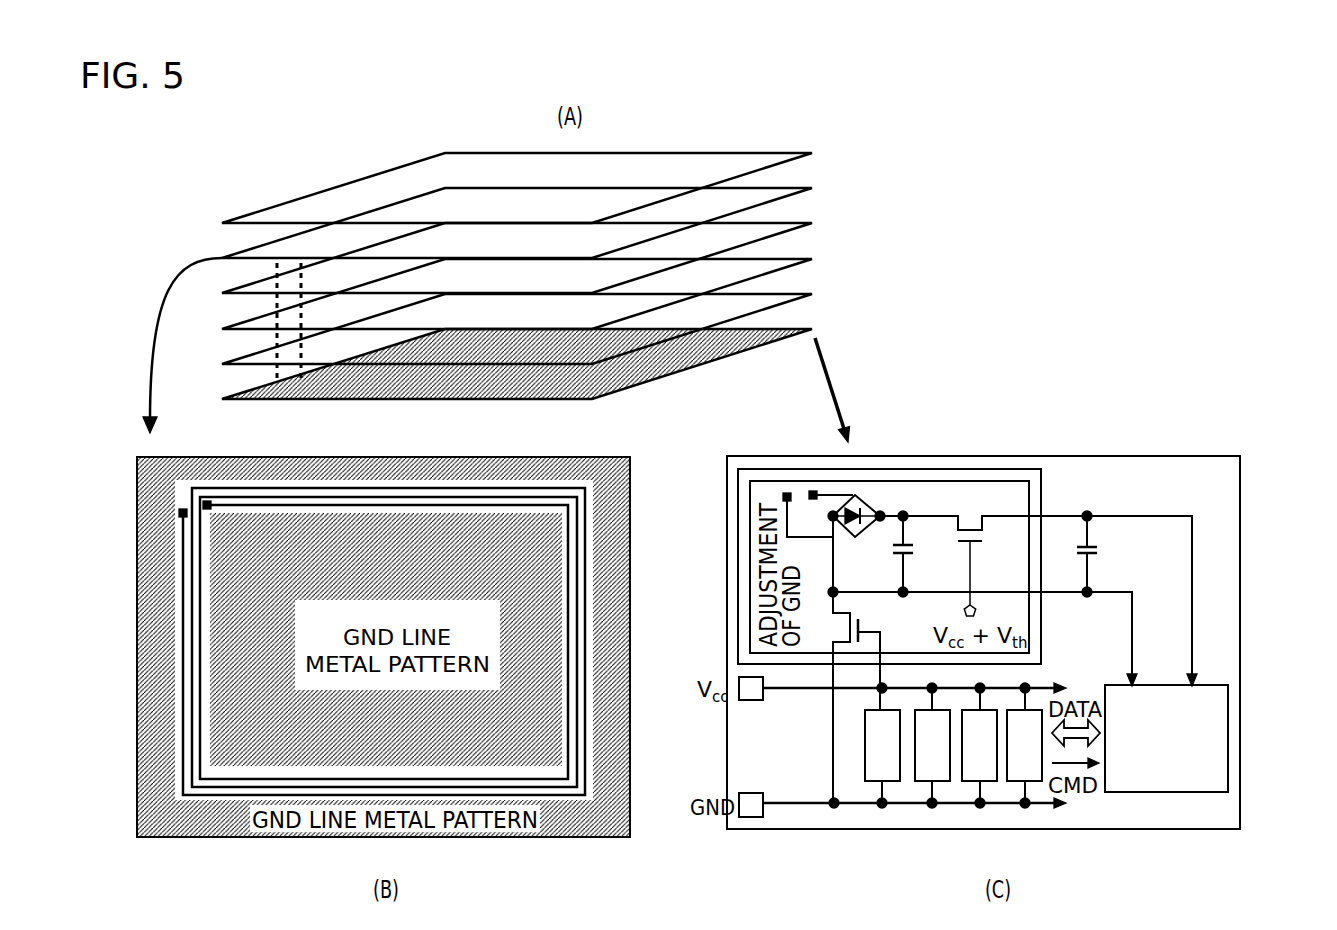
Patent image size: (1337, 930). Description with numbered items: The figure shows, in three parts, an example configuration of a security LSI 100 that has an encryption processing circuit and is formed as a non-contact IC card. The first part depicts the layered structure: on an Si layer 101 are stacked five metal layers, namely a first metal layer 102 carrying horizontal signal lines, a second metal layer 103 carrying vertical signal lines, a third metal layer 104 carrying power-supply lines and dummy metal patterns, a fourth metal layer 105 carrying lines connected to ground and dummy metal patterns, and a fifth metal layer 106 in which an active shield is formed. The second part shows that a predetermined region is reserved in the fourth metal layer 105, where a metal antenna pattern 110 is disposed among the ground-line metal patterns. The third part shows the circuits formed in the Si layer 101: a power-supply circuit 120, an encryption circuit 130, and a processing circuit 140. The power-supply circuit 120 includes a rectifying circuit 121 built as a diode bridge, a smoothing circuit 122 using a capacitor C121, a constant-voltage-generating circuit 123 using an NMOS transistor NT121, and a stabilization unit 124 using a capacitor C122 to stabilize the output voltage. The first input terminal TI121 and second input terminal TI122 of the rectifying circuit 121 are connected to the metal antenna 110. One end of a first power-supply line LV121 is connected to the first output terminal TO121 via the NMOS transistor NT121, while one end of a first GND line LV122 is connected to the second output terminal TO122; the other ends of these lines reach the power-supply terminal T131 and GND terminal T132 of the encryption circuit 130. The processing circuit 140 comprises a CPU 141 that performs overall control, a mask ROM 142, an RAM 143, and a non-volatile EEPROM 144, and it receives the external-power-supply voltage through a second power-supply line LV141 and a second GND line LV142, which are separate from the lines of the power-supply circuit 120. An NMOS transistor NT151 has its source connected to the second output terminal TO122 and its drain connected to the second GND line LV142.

The security LSI 100 is at (730, 98).
The Si layer 101 is at (822, 314).
The first metal layer 102 is at (822, 279).
The second metal layer 103 is at (822, 244).
The third metal layer 104 is at (822, 208).
The fourth metal layer 105 is at (822, 173).
The fifth metal layer 106 is at (822, 138).
The metal antenna pattern 110 is at (390, 492).
The power-supply circuit 120 is at (1047, 463).
The rectifying circuit 121 is at (847, 486).
The smoothing circuit 122 is at (903, 474).
The constant-voltage-generating circuit 123 is at (980, 474).
The stabilization unit 124 is at (1120, 478).
The encryption circuit 130 is at (1228, 720).
The processing circuit 140 is at (868, 812).
The CPU 141 is at (1035, 783).
The mask ROM 142 is at (893, 783).
The RAM 143 is at (943, 783).
The non-volatile memory 144 is at (990, 783).
The first input terminal TI121 is at (827, 513).
The first output terminal TO121 is at (880, 513).
The second input terminal TI122 is at (781, 496).
The second output terminal TO122 is at (811, 492).
The capacitor C121 is at (896, 554).
The capacitor C122 is at (1097, 548).
The NMOS transistor NT121 is at (952, 545).
The NMOS transistor NT151 is at (860, 622).
The first power-supply line LV121 is at (1003, 518).
The first GND line LV122 is at (1085, 596).
The second power-supply line LV141 is at (785, 692).
The second GND line LV142 is at (789, 800).
The power-supply terminal T131 is at (1194, 683).
The GND terminal T132 is at (1128, 683).